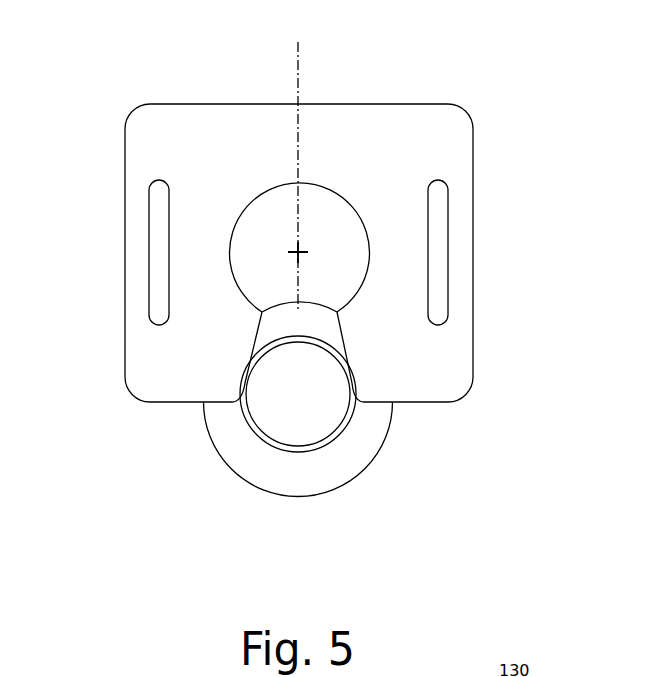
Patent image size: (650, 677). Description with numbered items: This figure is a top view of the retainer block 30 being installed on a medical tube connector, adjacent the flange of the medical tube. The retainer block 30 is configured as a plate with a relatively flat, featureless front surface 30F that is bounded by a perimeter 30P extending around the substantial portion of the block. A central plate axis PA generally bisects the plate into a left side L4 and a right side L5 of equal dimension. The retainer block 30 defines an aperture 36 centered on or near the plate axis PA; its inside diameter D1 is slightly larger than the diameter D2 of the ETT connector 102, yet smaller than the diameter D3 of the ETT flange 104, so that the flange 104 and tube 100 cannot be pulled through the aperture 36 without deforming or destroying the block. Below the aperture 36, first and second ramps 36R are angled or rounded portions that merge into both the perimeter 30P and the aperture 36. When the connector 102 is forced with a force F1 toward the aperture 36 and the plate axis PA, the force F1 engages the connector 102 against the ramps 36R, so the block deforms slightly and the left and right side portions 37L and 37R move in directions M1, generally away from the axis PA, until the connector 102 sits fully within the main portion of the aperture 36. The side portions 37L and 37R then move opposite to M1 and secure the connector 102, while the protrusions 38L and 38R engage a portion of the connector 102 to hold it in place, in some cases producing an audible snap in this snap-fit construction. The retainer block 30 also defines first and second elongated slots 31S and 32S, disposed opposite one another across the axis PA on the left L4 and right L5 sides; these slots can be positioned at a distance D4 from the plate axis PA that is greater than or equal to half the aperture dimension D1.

The retainer block 30 is at (150, 78).
The front surface 30F is at (392, 113).
The perimeter 30P is at (470, 110).
The first slot 31S is at (157, 190).
The second slot 32S is at (440, 190).
The aperture 36 is at (247, 194).
The ramps 36R is at (257, 346).
The left side portion 37L is at (140, 386).
The right side portion 37R is at (440, 375).
The left protrusion 38L is at (260, 311).
The right protrusion 38R is at (339, 311).
The tube 100 is at (282, 416).
The ETT connector 102 is at (345, 430).
The ETT flange 104 is at (380, 428).
The left side L4 is at (298, 62).
The right side L5 is at (298, 62).
The plate axis PA is at (298, 252).
The aperture diameter D1 is at (233, 252).
The connector diameter D2 is at (240, 423).
The flange diameter D3 is at (205, 403).
The slot distance D4 is at (426, 204).
The side portion movement direction M1 is at (222, 386).
The insertion force F1 is at (298, 345).